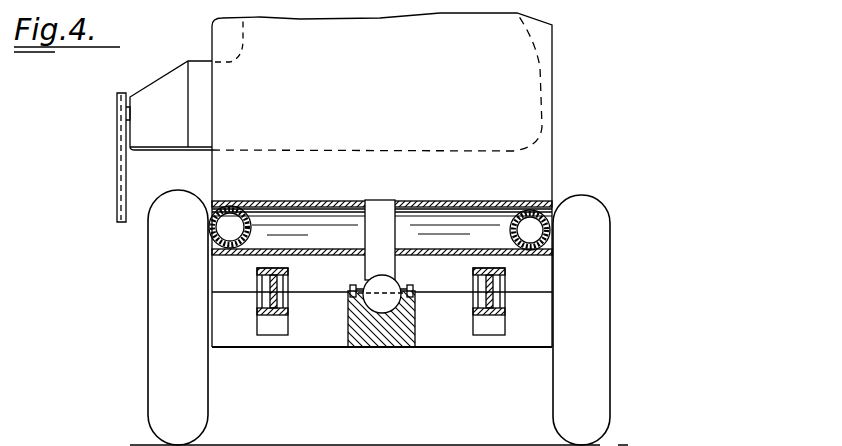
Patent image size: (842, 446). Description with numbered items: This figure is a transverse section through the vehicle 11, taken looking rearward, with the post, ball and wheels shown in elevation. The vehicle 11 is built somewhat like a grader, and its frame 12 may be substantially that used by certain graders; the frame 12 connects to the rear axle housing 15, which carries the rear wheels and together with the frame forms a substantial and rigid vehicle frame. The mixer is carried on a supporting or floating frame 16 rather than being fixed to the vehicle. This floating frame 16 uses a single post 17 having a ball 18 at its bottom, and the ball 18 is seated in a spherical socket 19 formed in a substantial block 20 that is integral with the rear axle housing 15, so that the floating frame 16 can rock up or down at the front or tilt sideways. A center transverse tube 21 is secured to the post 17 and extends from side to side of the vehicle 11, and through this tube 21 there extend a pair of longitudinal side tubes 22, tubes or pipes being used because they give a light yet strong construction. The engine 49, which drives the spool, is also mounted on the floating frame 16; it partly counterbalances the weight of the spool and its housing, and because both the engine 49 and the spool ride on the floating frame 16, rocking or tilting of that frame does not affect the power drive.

The vehicle 11 is at (607, 116).
The engine 49 is at (597, 42).
The floating frame 16 is at (588, 178).
The center transverse tube 21 is at (466, 203).
The longitudinal side tubes 22 is at (526, 212).
The post 17 is at (386, 222).
The rear axle housing 15 is at (453, 340).
The block 20 is at (367, 343).
The ball 18 is at (394, 291).
The spherical socket 19 is at (412, 302).
The frame 12 is at (508, 289).